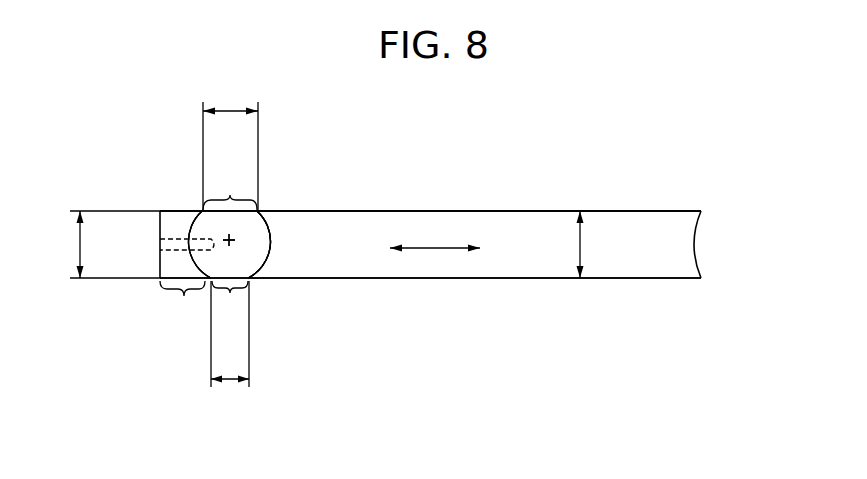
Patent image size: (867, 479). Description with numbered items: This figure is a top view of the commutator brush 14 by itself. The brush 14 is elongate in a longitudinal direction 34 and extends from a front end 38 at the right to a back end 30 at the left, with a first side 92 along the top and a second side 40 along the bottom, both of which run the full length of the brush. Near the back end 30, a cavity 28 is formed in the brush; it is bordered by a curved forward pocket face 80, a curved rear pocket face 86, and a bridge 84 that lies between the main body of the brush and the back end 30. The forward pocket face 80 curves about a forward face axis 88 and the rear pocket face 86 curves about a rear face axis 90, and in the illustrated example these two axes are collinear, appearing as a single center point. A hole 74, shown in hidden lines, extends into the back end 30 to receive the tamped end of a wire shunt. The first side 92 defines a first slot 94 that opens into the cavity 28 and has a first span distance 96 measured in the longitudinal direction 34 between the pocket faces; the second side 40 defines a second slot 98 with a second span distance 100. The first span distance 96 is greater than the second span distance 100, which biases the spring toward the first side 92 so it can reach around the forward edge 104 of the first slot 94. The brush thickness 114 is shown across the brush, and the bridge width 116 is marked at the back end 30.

The commutator brush 14 is at (716, 171).
The cavity 28 is at (245, 268).
The back end 30 is at (184, 297).
The longitudinal direction 34 is at (431, 247).
The front end 38 is at (694, 243).
The second side 40 is at (504, 279).
The hole 74 is at (175, 254).
The forward pocket face 80 is at (259, 235).
The bridge 84 is at (231, 241).
The rear pocket face 86 is at (204, 225).
The forward face axis 88 is at (231, 239).
The rear face axis 90 is at (233, 263).
The first side 92 is at (521, 211).
The first slot 94 is at (230, 185).
The first span distance 96 is at (228, 109).
The second slot 98 is at (230, 303).
The second span distance 100 is at (230, 383).
The forward edge 104 is at (261, 211).
The brush thickness 114 is at (582, 244).
The bridge width 116 is at (80, 244).